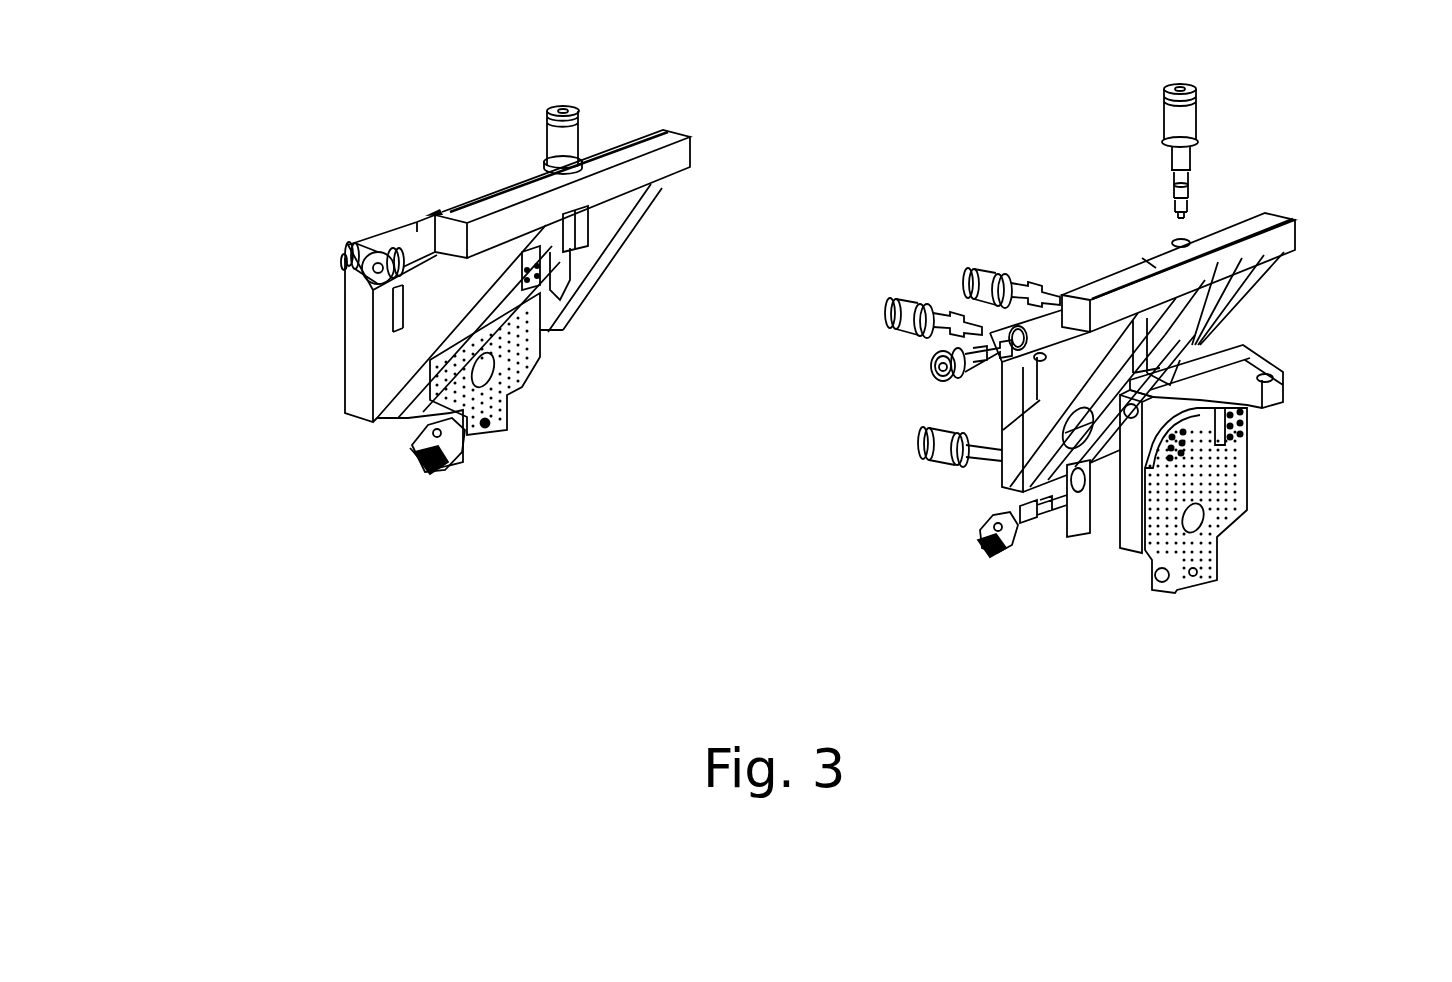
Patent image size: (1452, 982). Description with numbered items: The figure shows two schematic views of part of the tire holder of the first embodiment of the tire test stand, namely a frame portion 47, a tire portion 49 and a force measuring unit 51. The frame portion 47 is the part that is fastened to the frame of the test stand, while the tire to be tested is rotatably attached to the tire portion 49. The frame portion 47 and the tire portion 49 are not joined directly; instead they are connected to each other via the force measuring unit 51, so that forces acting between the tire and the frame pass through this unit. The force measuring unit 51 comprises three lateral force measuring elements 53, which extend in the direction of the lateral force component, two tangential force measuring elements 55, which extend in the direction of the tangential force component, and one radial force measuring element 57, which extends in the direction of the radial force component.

The frame portion 47 is at (444, 244).
The tire portion 49 is at (520, 358).
The force measuring unit 51 is at (295, 331).
The lateral force measuring elements 53 is at (375, 252).
The tangential force measuring elements 55 is at (343, 268).
The radial force measuring element 57 is at (548, 127).